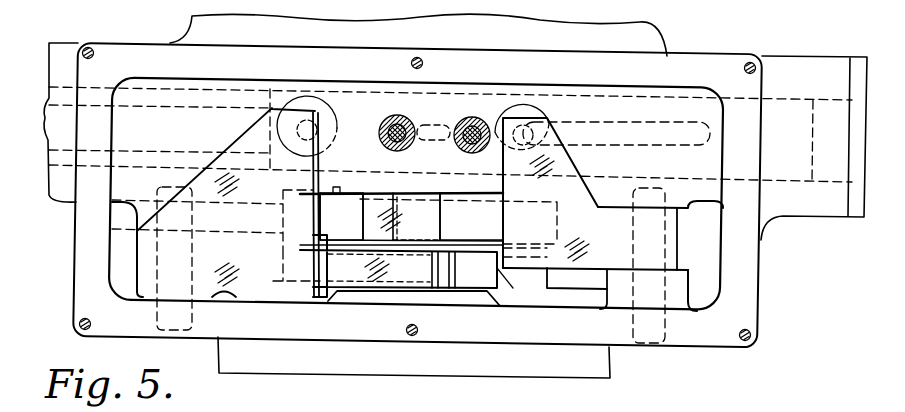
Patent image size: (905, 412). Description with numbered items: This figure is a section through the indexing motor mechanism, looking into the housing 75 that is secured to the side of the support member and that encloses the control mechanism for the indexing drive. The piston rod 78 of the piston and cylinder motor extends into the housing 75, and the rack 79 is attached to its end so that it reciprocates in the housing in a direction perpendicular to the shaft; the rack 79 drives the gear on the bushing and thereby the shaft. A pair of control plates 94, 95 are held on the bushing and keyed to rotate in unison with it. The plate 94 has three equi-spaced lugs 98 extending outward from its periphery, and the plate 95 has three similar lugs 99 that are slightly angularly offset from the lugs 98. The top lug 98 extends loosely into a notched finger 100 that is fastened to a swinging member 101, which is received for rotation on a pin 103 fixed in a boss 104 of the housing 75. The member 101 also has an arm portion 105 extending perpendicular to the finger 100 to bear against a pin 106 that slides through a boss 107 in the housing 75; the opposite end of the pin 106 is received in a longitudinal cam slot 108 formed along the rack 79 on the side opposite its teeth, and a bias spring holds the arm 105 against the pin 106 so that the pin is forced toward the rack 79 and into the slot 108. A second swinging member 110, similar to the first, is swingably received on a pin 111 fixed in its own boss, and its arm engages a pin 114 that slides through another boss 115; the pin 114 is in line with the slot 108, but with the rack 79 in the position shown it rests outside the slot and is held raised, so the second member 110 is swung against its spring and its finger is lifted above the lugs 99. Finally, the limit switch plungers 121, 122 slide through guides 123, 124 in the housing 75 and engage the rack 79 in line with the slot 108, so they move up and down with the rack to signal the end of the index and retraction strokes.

The housing 75 is at (760, 276).
The piston rod 78 is at (197, 100).
The rack 79 is at (363, 90).
The control plate 94 is at (353, 228).
The control plate 95 is at (548, 279).
The lugs 98 is at (395, 192).
The lugs 99 is at (492, 288).
The notched finger 100 is at (487, 229).
The swinging member 101 is at (588, 235).
The pin 103 is at (668, 252).
The boss 104 is at (606, 297).
The arm portion 105 is at (583, 158).
The pin 106 is at (531, 134).
The boss 107 is at (521, 106).
The cam slot 108 is at (639, 127).
The second swinging member 110 is at (236, 298).
The pin 111 is at (155, 313).
The pin 114 is at (291, 99).
The boss 115 is at (333, 118).
The plunger 121 is at (387, 135).
The plunger 122 is at (466, 143).
The guide 123 is at (402, 117).
The guide 124 is at (468, 116).